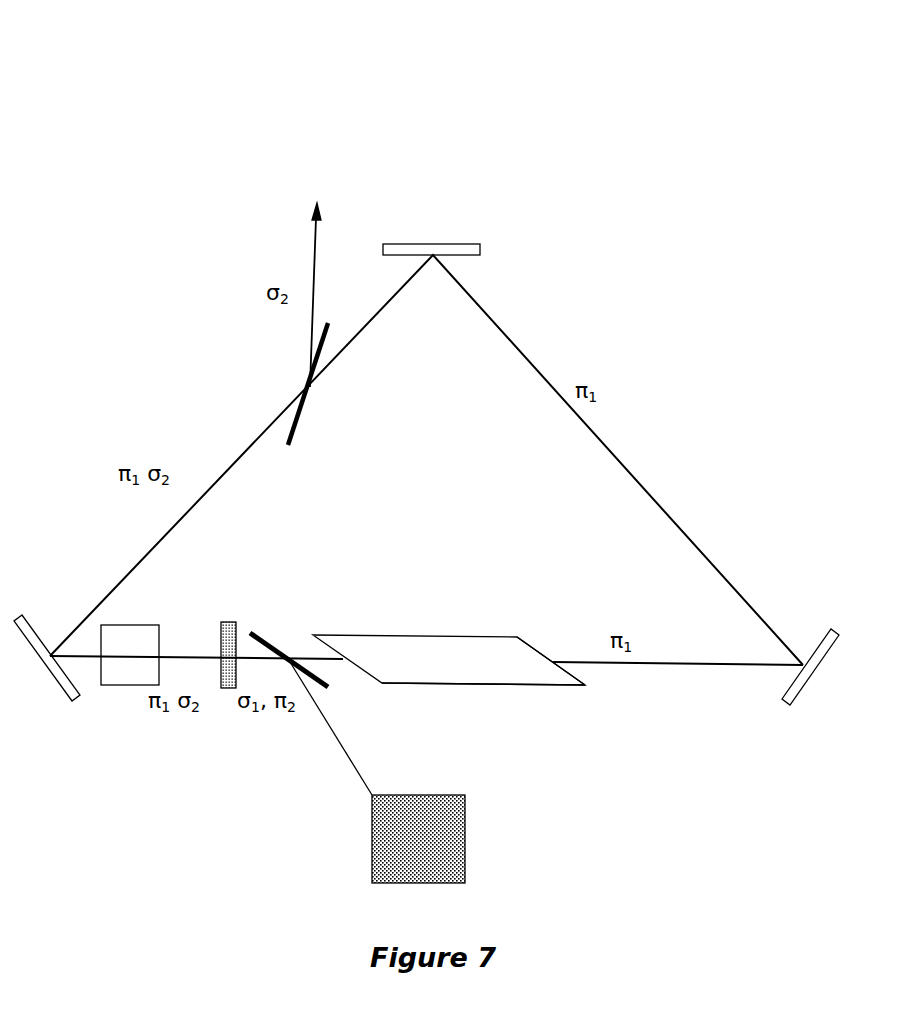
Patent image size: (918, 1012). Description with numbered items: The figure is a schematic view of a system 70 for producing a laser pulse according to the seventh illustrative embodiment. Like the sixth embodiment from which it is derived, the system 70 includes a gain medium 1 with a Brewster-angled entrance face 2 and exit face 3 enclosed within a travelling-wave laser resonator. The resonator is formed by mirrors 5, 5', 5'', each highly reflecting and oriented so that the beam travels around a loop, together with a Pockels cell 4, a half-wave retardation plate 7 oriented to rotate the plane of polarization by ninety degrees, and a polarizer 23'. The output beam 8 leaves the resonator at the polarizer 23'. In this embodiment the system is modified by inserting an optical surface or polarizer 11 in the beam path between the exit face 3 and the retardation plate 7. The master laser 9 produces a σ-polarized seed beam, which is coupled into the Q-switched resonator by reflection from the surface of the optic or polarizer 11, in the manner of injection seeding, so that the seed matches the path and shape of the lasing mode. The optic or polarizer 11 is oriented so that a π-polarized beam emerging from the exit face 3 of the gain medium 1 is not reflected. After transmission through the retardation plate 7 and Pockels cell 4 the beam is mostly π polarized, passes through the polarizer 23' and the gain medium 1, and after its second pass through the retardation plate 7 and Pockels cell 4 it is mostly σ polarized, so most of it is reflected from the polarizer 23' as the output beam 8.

The system for producing a laser pulse 70 is at (237, 126).
The mirror 5 is at (47, 614).
The mirror 5' is at (800, 598).
The mirror 5'' is at (406, 211).
The Pockels cell 4 is at (101, 673).
The half-wave retardation plate 7 is at (228, 622).
The optical surface or polarizer 11 is at (270, 642).
The polarizer 23' is at (360, 398).
The output beam 8 is at (315, 228).
The gain medium 1 is at (422, 635).
The entrance face 2 is at (533, 648).
The exit face 3 is at (367, 677).
The master laser 9 is at (465, 833).